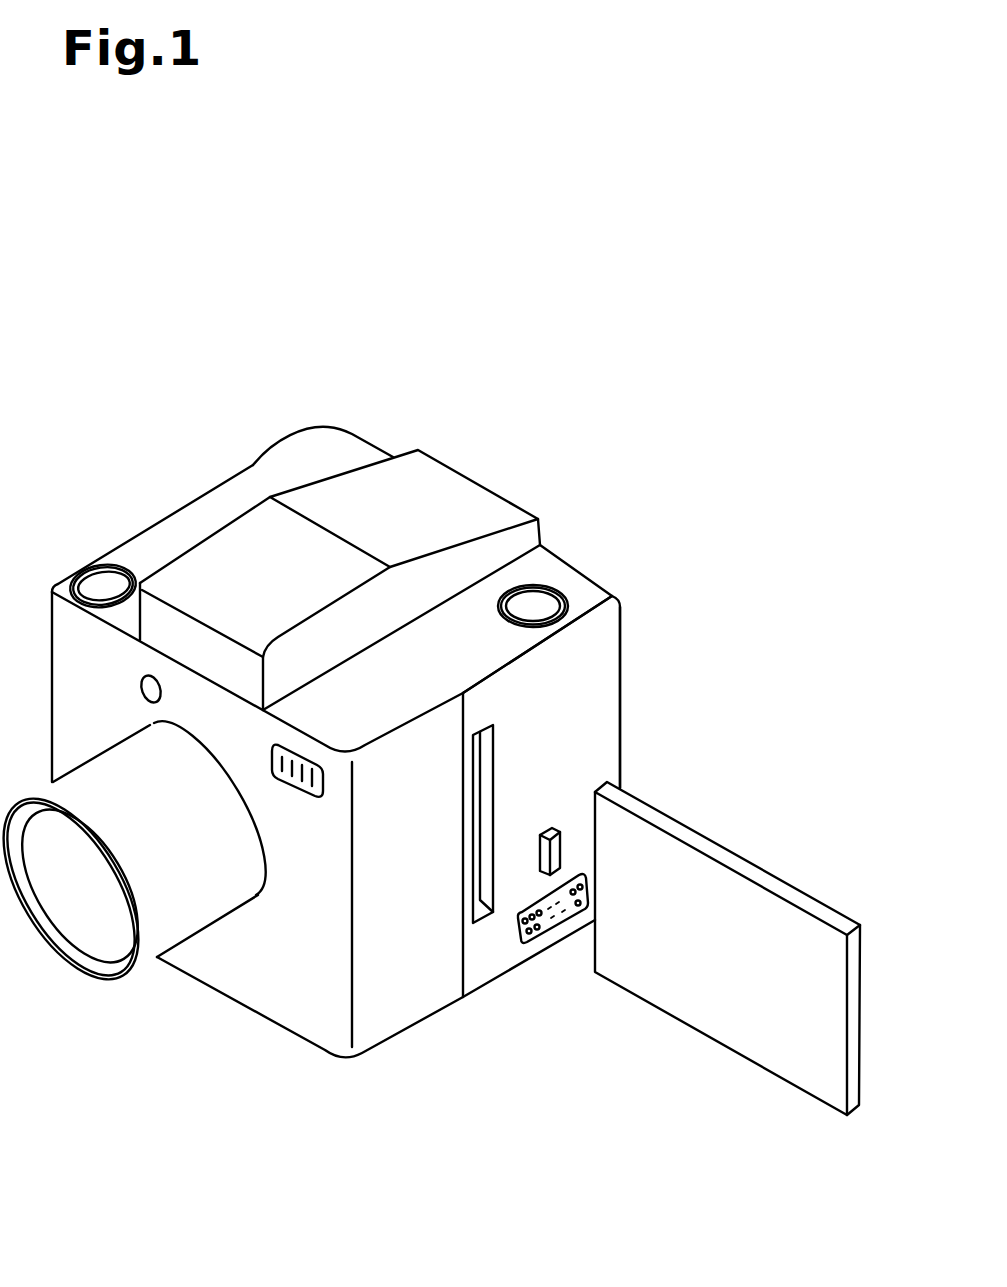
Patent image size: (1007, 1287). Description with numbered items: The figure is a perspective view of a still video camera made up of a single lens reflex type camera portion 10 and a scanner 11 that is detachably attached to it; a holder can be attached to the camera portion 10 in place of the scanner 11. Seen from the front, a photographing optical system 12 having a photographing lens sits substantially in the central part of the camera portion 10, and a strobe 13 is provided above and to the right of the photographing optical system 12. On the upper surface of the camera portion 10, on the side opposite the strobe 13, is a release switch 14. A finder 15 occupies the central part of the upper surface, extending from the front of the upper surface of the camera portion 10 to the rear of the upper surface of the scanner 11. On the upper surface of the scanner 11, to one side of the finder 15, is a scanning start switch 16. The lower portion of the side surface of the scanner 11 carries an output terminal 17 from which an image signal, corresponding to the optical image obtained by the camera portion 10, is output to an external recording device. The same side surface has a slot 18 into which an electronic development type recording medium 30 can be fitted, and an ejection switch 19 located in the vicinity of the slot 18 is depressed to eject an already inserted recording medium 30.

The camera portion 10 is at (262, 1028).
The scanner 11 is at (632, 667).
The photographing optical system 12 is at (150, 925).
The strobe 13 is at (298, 787).
The release switch 14 is at (93, 586).
The finder 15 is at (247, 537).
The scanning start switch 16 is at (538, 603).
The output terminal 17 is at (547, 927).
The slot 18 is at (482, 887).
The ejection switch 19 is at (565, 840).
The electronic development type recording medium 30 is at (755, 1035).